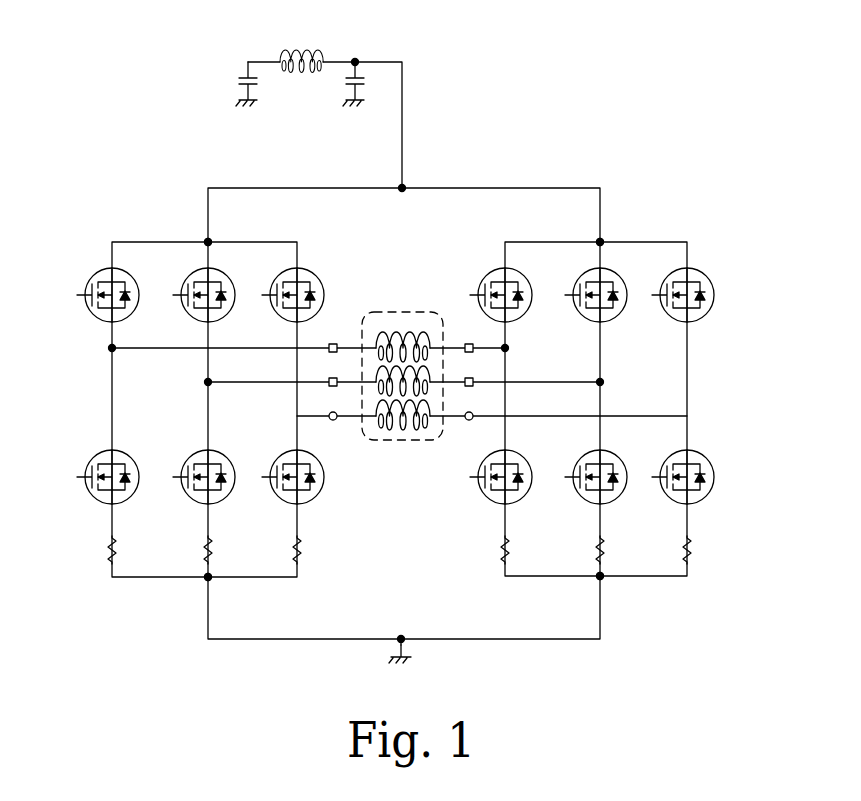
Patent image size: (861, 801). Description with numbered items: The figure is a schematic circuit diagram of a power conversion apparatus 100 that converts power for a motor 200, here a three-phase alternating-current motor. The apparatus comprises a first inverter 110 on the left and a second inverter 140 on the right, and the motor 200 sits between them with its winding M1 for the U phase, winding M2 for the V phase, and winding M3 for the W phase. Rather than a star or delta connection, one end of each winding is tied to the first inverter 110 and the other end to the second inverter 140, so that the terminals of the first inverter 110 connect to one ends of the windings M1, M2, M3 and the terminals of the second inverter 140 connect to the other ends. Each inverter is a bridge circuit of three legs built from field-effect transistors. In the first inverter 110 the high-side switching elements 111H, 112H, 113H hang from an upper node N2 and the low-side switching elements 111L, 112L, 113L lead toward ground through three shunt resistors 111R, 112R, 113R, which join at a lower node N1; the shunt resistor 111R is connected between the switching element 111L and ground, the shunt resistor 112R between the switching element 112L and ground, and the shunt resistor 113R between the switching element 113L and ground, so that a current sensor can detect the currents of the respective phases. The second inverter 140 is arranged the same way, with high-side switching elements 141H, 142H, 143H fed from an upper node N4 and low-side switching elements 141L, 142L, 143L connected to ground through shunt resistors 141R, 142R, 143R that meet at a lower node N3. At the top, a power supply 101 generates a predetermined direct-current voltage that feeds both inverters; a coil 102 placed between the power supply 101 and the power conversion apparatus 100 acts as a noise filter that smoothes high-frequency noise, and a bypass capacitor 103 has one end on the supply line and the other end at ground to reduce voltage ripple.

The power conversion apparatus 100 is at (550, 118).
The power supply 101 is at (240, 83).
The coil 102 is at (308, 48).
The capacitor 103 is at (345, 94).
The first inverter 110 is at (57, 372).
The second inverter 140 is at (731, 382).
The motor 200 is at (413, 312).
The high-side switching element 111H is at (88, 290).
The high-side switching element 112H is at (184, 290).
The high-side switching element 113H is at (273, 290).
The low-side switching element 111L is at (88, 469).
The low-side switching element 112L is at (184, 469).
The low-side switching element 113L is at (273, 469).
The shunt resistor 111R is at (105, 554).
The shunt resistor 112R is at (199, 554).
The shunt resistor 113R is at (287, 554).
The high-side switching element 141H is at (481, 290).
The high-side switching element 142H is at (576, 290).
The high-side switching element 143H is at (663, 290).
The low-side switching element 141L is at (481, 469).
The low-side switching element 142L is at (576, 469).
The low-side switching element 143L is at (663, 469).
The shunt resistor 141R is at (493, 554).
The shunt resistor 142R is at (589, 554).
The shunt resistor 143R is at (677, 554).
The winding for the U phase M1 is at (386, 335).
The winding for the V phase M2 is at (378, 366).
The winding for the W phase M3 is at (387, 428).
The node N1 is at (206, 579).
The node N2 is at (206, 240).
The node N3 is at (602, 578).
The node N4 is at (602, 242).